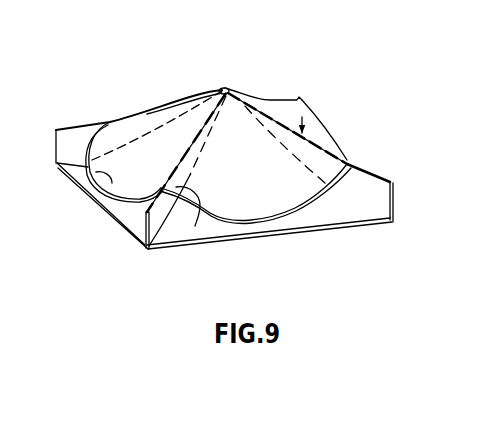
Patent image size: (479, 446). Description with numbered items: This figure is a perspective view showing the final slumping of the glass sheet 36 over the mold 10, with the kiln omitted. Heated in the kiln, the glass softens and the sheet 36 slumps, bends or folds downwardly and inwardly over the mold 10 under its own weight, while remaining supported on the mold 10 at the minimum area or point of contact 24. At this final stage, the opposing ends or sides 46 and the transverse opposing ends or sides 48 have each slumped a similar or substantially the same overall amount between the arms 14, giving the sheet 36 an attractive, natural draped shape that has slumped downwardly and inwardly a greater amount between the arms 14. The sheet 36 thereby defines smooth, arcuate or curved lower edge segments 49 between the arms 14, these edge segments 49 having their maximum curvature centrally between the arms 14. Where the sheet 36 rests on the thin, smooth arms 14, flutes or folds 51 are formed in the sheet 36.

The mold 10 is at (110, 222).
The arms 14 is at (70, 125).
The point of contact 24 is at (225, 84).
The sheet 36 is at (148, 110).
The opposing ends or sides 46 is at (328, 135).
The opposing ends or sides 48 is at (313, 203).
The lower edge segments 49 is at (57, 172).
The flutes or folds 51 is at (125, 117).